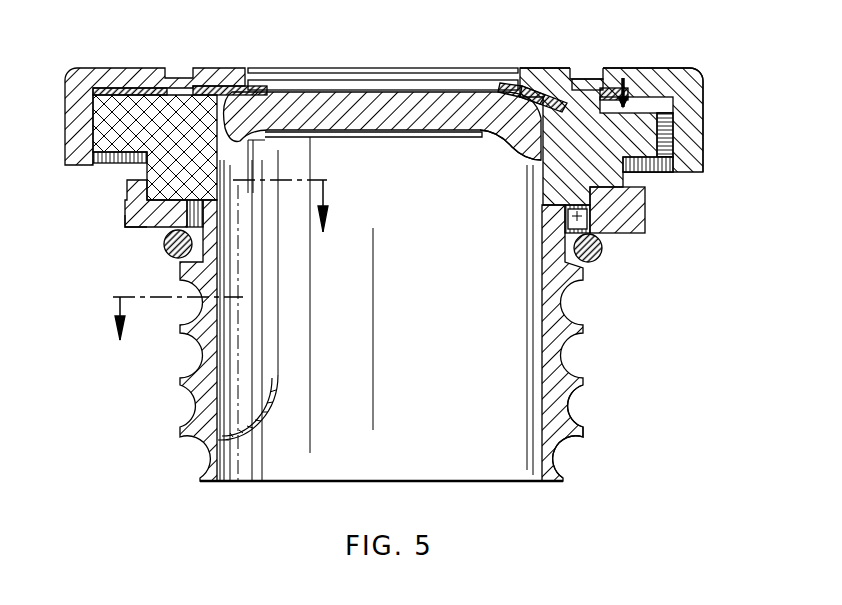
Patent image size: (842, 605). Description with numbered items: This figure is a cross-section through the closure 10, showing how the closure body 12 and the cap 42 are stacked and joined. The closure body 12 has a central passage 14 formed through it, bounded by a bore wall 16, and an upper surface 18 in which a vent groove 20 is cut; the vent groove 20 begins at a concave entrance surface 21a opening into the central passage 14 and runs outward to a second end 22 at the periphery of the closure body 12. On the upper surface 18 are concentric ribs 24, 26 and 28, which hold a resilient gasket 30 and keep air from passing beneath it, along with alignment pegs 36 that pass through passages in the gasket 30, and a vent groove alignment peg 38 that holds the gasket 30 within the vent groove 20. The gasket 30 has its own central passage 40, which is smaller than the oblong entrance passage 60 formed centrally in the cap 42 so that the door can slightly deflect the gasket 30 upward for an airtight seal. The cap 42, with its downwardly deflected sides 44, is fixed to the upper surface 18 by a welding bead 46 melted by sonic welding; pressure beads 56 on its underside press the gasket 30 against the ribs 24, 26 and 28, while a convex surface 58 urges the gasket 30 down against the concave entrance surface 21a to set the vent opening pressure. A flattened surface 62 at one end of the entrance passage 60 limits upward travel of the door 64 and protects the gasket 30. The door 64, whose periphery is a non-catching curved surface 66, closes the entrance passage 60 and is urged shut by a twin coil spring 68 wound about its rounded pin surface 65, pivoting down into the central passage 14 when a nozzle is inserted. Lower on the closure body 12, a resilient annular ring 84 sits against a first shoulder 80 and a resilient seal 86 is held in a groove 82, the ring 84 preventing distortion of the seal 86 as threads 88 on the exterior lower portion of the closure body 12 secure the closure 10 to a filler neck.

The closure 10 is at (224, 250).
The closure body 12 is at (573, 364).
The central passage 14 is at (513, 333).
The bore wall 16 is at (535, 300).
The upper surface 18 is at (108, 88).
The vent groove 20 is at (624, 100).
The concave entrance surface 21a is at (657, 147).
The second end 22 is at (663, 117).
The concentric rib 24 is at (127, 221).
The inner rib 26 is at (127, 192).
The outer rib 28 is at (152, 93).
The resilient gasket 30 is at (520, 97).
The alignment peg 36 is at (177, 80).
The vent groove alignment peg 38 is at (582, 82).
The central passage 40 is at (303, 82).
The cap 42 is at (673, 70).
The downwardly deflected side 44 is at (700, 98).
The welding bead 46 is at (120, 90).
The pressure bead 56 is at (234, 92).
The convex surface 58 is at (540, 105).
The entrance passage 60 is at (412, 70).
The flattened surface 62 is at (513, 90).
The door 64 is at (370, 95).
The rounded pin surface 65 is at (278, 155).
The curved surface 66 is at (507, 133).
The twin coil spring 68 is at (323, 138).
The first shoulder 80 is at (640, 180).
The groove 82 is at (643, 222).
The resilient annular ring 84 is at (643, 228).
The resilient seal 86 is at (602, 258).
The threads 88 is at (577, 405).